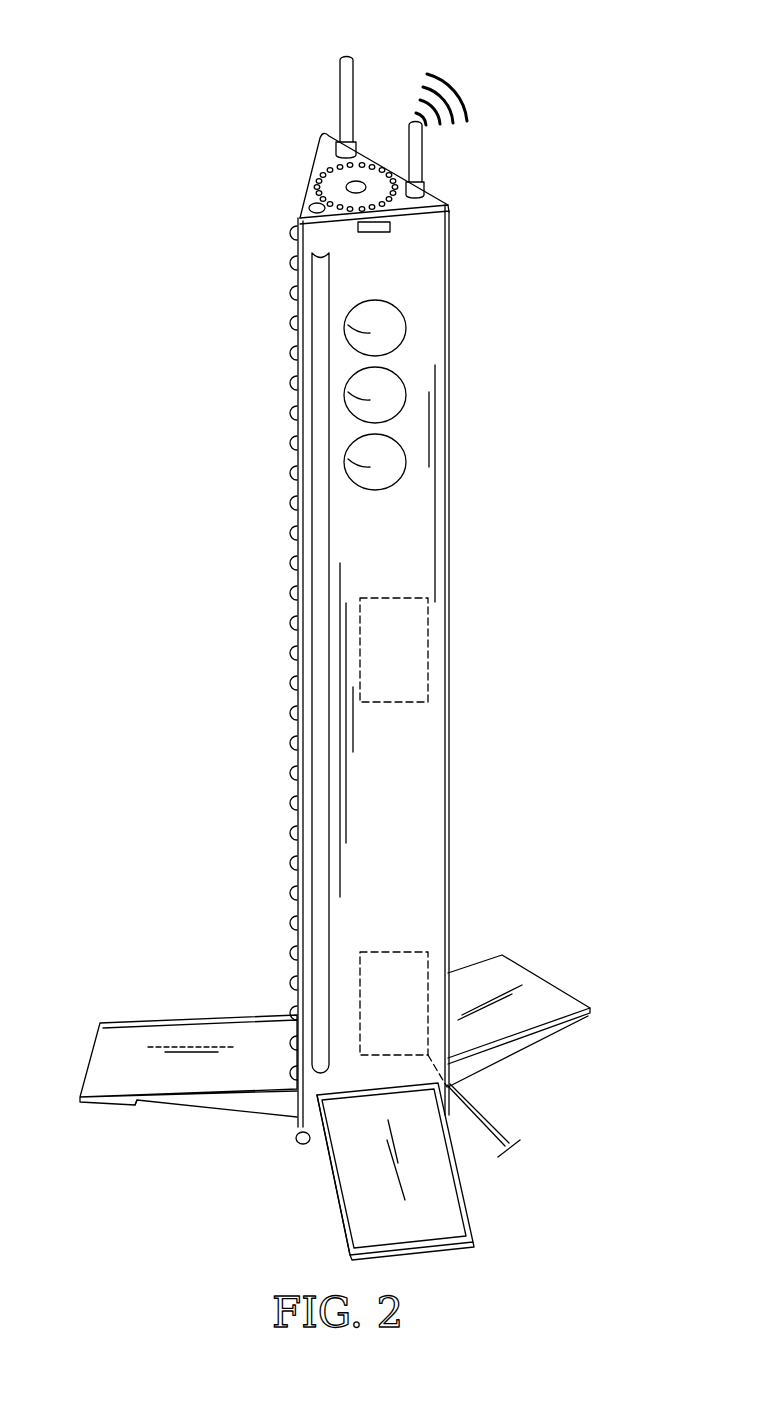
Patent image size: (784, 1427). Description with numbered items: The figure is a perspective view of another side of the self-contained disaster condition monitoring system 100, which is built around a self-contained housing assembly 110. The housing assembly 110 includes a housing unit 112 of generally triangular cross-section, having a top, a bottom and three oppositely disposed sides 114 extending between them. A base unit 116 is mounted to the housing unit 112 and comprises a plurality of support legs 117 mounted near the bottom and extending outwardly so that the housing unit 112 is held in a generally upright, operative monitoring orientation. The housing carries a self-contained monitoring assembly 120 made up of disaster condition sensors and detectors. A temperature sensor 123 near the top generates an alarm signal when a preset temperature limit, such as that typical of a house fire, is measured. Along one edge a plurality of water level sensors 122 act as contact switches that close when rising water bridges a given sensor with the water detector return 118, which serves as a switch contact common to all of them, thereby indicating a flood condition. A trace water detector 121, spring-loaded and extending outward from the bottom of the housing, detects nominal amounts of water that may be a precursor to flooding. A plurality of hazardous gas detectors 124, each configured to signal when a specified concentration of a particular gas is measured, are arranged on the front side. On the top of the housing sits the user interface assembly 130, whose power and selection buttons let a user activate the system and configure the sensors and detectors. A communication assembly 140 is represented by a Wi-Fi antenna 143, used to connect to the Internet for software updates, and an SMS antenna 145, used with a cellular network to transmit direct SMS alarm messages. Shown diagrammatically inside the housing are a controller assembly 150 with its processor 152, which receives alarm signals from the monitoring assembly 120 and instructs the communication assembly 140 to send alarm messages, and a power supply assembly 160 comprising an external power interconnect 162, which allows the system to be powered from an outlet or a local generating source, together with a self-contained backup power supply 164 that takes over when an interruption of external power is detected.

The self-contained disaster condition monitoring system 100 is at (540, 94).
The self-contained housing assembly 110 is at (485, 310).
The housing unit 112 is at (447, 467).
The sides 114 is at (415, 520).
The base unit 116 is at (183, 1120).
The support legs 117 is at (327, 1212).
The water detector return 118 is at (318, 430).
The self-contained monitoring assembly 120 is at (212, 349).
The trace water detector 121 is at (303, 1143).
The water level sensors 122 is at (295, 510).
The temperature sensor 123 is at (375, 234).
The hazardous gas detector 124 is at (395, 325).
The user interface assembly 130 is at (297, 164).
The communication assembly 140 is at (416, 58).
The Wi-Fi antenna 143 is at (339, 80).
The SMS antenna 145 is at (423, 170).
The controller assembly 150 is at (458, 598).
The processor 152 is at (428, 642).
The power supply assembly 160 is at (407, 935).
The external power interconnect 162 is at (492, 1120).
The self-contained backup power supply 164 is at (432, 962).